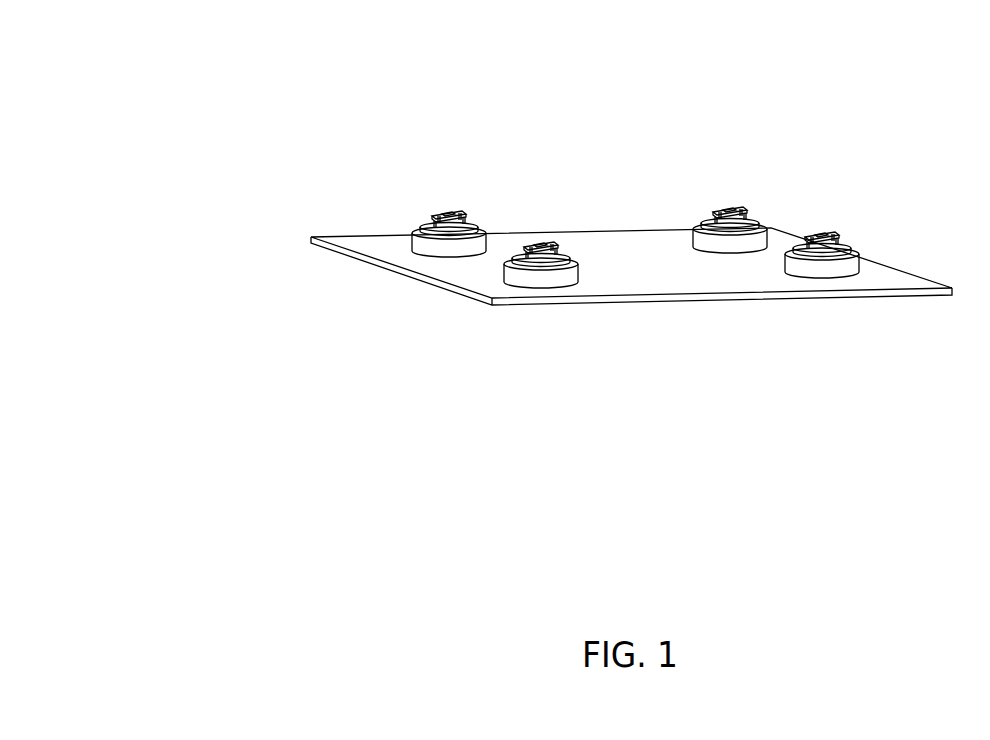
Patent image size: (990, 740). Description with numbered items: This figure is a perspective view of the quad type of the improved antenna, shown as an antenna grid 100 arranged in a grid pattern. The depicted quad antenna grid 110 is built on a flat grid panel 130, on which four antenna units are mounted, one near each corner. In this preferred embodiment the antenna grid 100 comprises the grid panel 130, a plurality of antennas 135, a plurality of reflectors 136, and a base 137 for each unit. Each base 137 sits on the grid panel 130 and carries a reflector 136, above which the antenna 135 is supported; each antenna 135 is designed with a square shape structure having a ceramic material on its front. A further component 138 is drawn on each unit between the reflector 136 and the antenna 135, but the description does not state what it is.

The antenna grid 100 is at (569, 177).
The quad antenna grid 110 is at (917, 268).
The grid panel 130 is at (638, 285).
The antenna 135 is at (466, 214).
The reflector 136 is at (426, 224).
The base 137 is at (412, 235).
The interposer with leads 138 is at (448, 212).